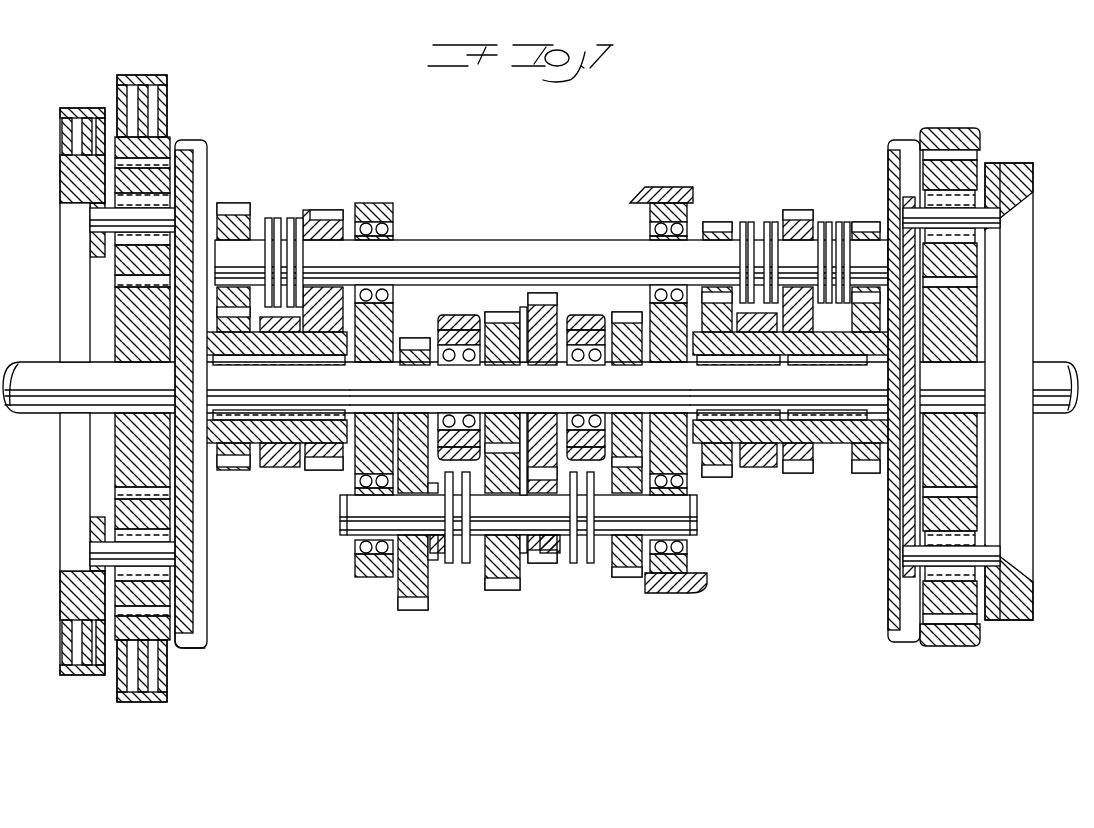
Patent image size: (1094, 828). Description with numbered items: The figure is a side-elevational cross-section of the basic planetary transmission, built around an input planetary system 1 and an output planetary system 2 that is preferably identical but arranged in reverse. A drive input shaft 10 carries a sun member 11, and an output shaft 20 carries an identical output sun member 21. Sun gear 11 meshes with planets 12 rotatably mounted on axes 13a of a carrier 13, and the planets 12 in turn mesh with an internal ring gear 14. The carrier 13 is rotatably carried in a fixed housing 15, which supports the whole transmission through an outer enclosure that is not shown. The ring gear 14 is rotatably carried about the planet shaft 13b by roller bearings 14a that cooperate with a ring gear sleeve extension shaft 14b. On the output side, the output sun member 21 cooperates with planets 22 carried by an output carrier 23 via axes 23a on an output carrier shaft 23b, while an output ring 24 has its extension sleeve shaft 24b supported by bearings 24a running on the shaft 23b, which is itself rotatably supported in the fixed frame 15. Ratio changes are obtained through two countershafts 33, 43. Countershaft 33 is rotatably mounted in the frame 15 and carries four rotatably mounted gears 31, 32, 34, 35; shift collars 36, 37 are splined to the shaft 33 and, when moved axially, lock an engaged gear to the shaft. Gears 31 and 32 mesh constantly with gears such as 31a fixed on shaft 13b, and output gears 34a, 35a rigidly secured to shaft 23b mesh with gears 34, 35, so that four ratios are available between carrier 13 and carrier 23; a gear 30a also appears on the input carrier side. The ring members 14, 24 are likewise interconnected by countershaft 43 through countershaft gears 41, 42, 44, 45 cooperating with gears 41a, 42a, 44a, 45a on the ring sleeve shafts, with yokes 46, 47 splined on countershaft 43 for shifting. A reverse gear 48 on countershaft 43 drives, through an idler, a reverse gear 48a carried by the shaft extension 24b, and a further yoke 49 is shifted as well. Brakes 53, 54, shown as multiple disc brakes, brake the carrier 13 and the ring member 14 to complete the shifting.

The input planetary system 1 is at (215, 594).
The output planetary system 2 is at (875, 620).
The drive input shaft 10 is at (100, 390).
The sun member 11 is at (130, 316).
The planets 12 is at (130, 262).
The carrier 13 is at (178, 533).
The axes 13a is at (100, 220).
The planet shaft 13b is at (392, 386).
The internal ring gear 14 is at (202, 620).
The roller bearings 14a is at (318, 360).
The ring gear sleeve extension shaft 14b is at (252, 432).
The fixed housing 15 is at (375, 205).
The output shaft 20 is at (1047, 373).
The output sun member 21 is at (960, 457).
The planets 22 is at (963, 265).
The output carrier 23 is at (998, 240).
The axes 23a is at (985, 553).
The output carrier shaft 23b is at (705, 386).
The output ring 24 is at (945, 136).
The bearings 24a is at (840, 360).
The extension sleeve shaft 24b is at (752, 455).
The gear 30a is at (513, 318).
The gear 31 is at (400, 592).
The gear 31a is at (410, 345).
The gear 32 is at (503, 592).
The counter shaft 33 is at (535, 514).
The gear 34 is at (547, 566).
The output gear 34a is at (538, 305).
The gear 35 is at (625, 578).
The output gear 35a is at (628, 320).
The shift collar 36 is at (460, 566).
The shift collar 37 is at (578, 566).
The countershaft gear 41 is at (232, 206).
The gear 41a is at (230, 470).
The countershaft gear 42 is at (320, 214).
The gear 42a is at (327, 468).
The counter shaft 43 is at (440, 246).
The countershaft gear 44 is at (710, 228).
The gear 44a is at (712, 480).
The countershaft gear 45 is at (796, 212).
The gear 45a is at (792, 480).
The yoke 46 is at (286, 240).
The yoke 47 is at (748, 240).
The reverse gear 48 is at (862, 228).
The reverse gear 48a is at (850, 485).
The yoke 49 is at (828, 240).
The brake 53 is at (70, 108).
The brake 54 is at (140, 76).